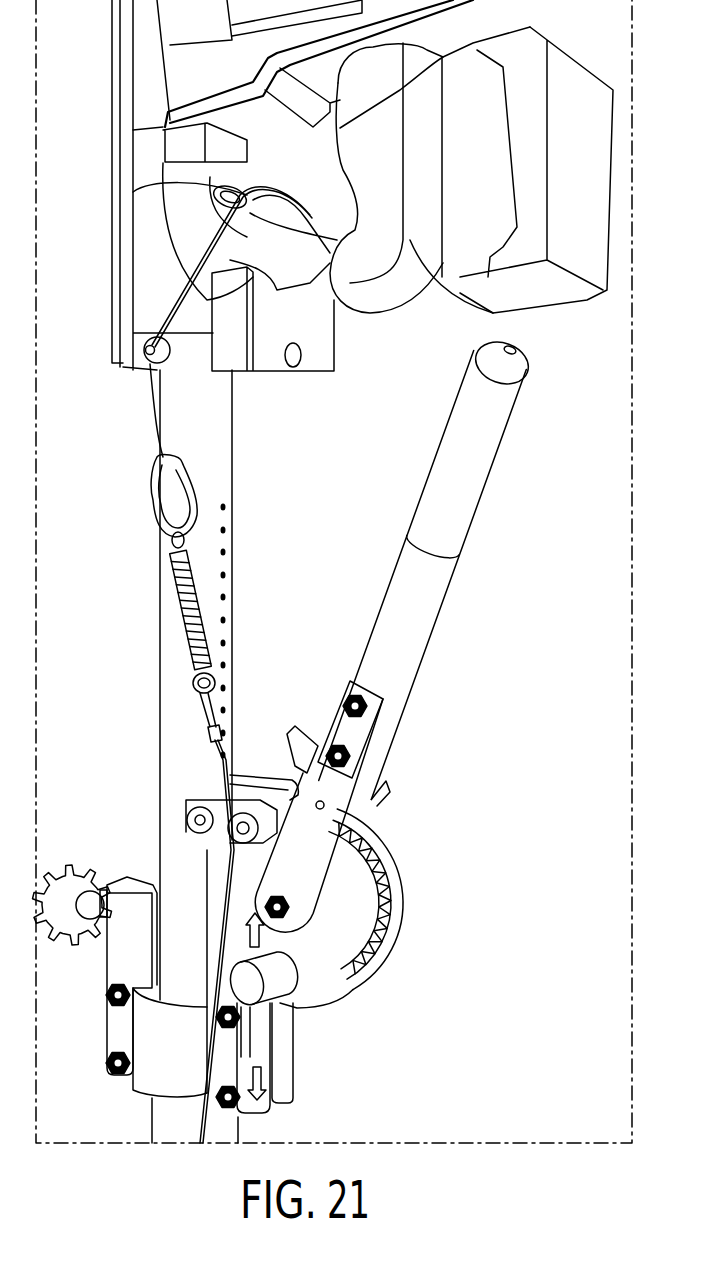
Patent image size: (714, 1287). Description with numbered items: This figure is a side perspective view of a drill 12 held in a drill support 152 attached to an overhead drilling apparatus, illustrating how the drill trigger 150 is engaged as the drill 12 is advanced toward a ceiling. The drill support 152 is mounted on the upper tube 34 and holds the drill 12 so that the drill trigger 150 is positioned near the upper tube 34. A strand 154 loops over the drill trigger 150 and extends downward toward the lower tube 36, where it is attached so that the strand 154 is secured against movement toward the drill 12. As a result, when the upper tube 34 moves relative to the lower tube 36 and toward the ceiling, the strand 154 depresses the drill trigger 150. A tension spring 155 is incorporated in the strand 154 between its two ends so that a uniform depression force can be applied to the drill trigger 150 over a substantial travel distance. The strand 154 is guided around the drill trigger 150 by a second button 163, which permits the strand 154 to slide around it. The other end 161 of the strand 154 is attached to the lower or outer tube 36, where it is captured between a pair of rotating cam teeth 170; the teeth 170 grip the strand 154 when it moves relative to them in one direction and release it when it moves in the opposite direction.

The drill 12 is at (170, 138).
The drill trigger 150 is at (167, 178).
The drill support 152 is at (127, 240).
The second button 163 is at (148, 362).
The upper tube 34 is at (195, 402).
The strand 154 is at (210, 767).
The tension spring 155 is at (195, 615).
The rotating cam teeth 170 is at (205, 807).
The end of the strand 161 is at (217, 927).
The lower tube 36 is at (187, 985).